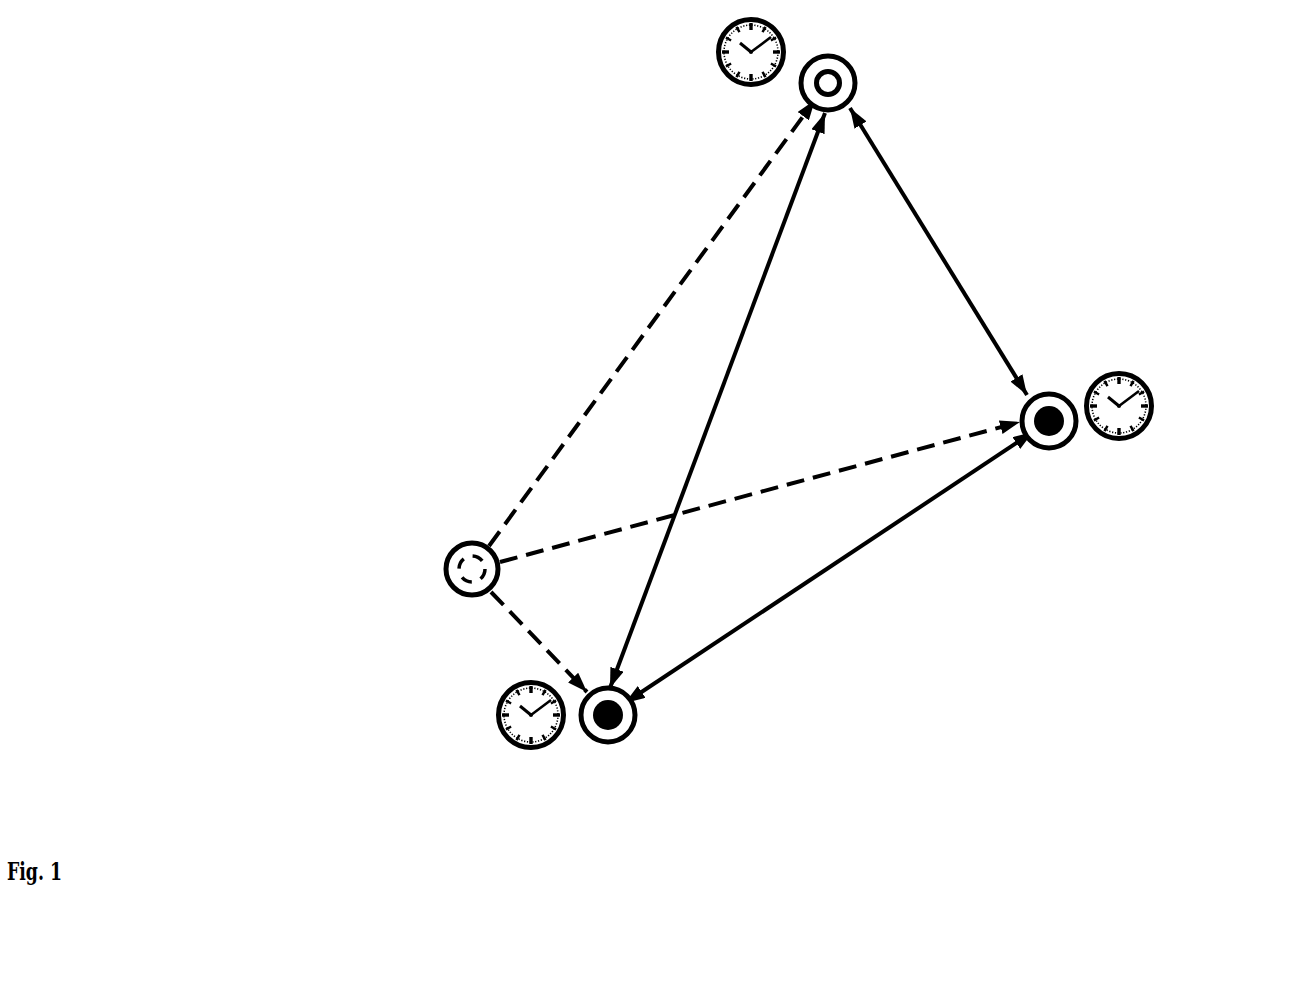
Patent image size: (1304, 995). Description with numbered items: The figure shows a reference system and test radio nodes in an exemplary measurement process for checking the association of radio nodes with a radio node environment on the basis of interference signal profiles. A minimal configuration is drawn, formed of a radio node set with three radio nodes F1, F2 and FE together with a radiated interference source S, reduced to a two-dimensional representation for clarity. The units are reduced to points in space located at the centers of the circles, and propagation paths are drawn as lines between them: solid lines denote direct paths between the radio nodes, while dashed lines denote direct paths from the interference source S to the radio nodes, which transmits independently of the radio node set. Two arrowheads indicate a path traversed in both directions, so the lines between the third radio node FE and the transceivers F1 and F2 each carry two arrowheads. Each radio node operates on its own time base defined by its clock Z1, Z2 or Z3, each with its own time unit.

The third radio node FE is at (918, 69).
The radio node F1 is at (665, 740).
The radio node F2 is at (1159, 393).
The radiated interference source S is at (367, 588).
The clock Z1 is at (506, 737).
The clock Z2 is at (1115, 430).
The clock Z3 is at (713, 55).